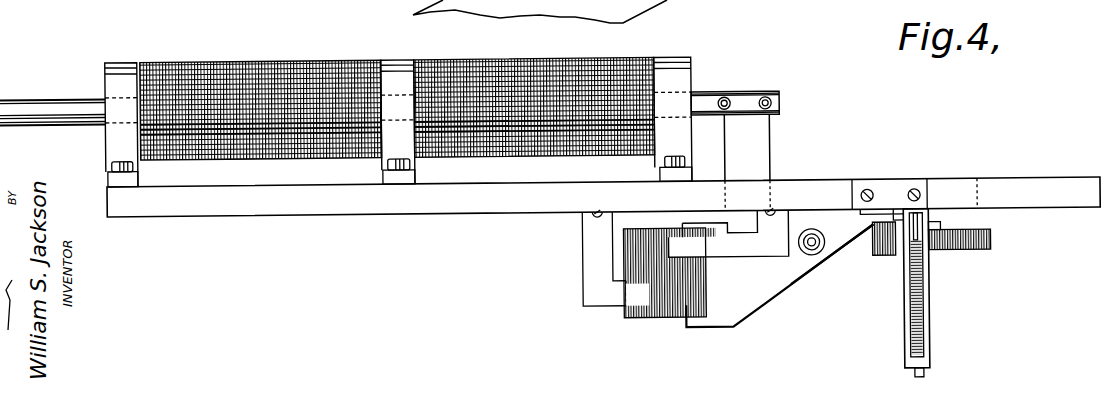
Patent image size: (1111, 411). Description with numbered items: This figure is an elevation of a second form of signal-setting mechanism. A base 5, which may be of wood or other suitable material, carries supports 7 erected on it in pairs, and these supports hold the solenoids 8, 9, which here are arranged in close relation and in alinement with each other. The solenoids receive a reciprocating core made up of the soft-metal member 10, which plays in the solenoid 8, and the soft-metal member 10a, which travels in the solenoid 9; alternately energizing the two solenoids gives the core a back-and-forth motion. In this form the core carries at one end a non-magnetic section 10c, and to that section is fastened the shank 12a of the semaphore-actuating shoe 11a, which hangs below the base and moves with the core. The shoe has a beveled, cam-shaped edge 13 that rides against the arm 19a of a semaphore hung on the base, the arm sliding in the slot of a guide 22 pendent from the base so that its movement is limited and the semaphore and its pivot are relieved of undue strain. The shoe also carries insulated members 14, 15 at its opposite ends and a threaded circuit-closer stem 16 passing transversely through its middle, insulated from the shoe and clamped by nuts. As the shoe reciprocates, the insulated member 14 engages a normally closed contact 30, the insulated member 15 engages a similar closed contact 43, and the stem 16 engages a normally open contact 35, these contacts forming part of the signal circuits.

The base 5 is at (1003, 182).
The supports 7 is at (678, 58).
The solenoid 8 is at (525, 58).
The solenoid 9 is at (257, 62).
The soft-metal member 10 is at (700, 92).
The soft-metal member 10a is at (13, 103).
The non-magnetic section 10c is at (755, 90).
The shoe 11a is at (778, 285).
The shank 12a is at (755, 147).
The beveled edge 13 is at (830, 275).
The insulated member 14 is at (882, 255).
The insulated member 15 is at (645, 315).
The threaded stem 16 is at (823, 242).
The arm 19a is at (925, 272).
The guide 22 is at (927, 318).
The normally closed contact 30 is at (990, 240).
The normally open contact 35 is at (735, 247).
The closed contact 43 is at (591, 272).